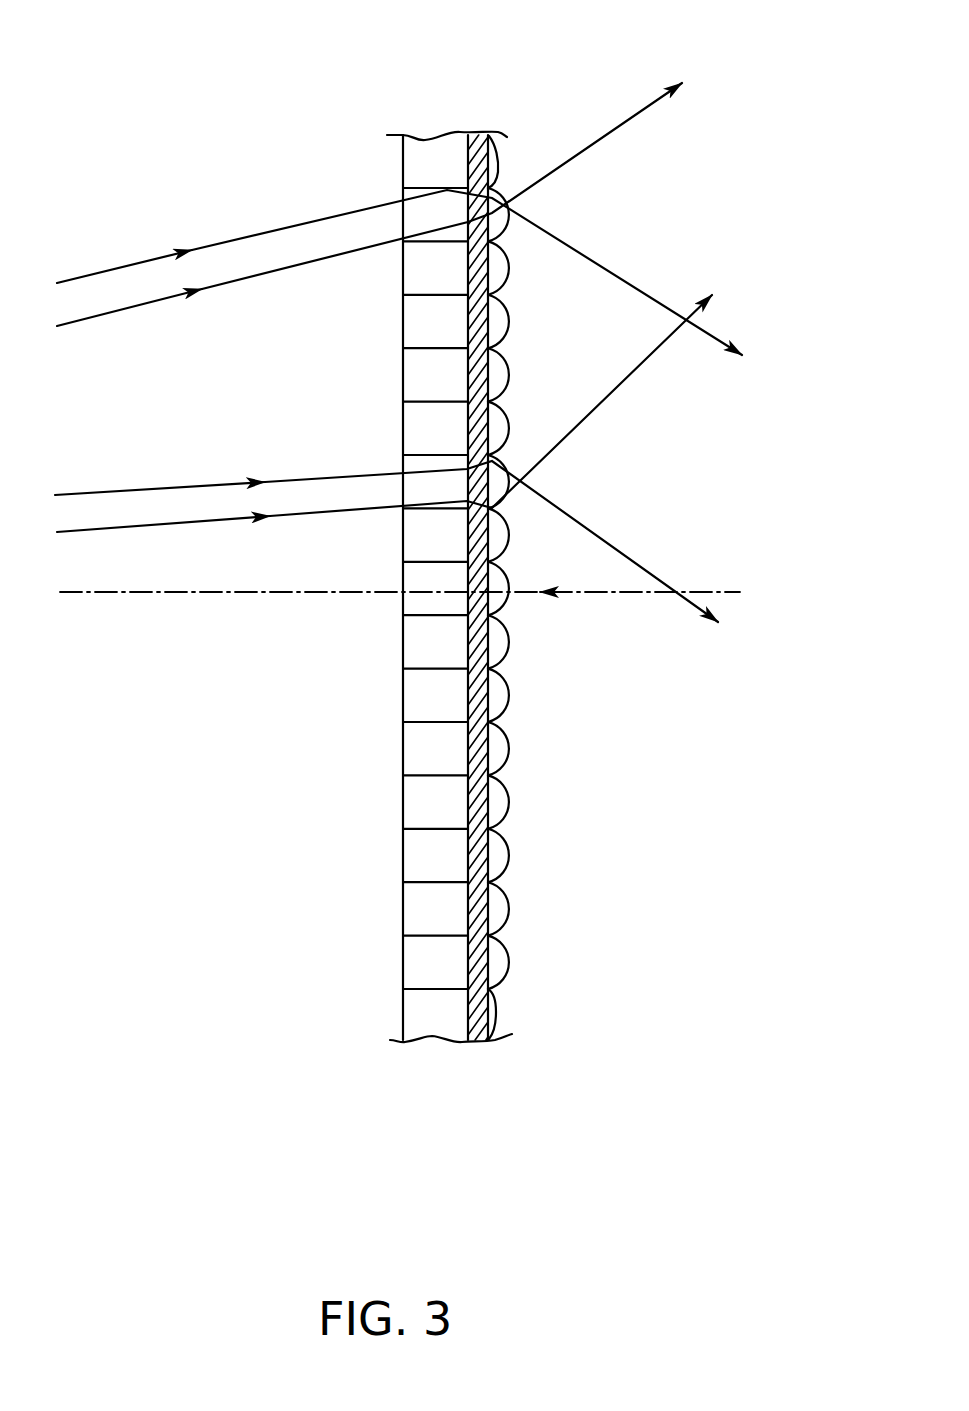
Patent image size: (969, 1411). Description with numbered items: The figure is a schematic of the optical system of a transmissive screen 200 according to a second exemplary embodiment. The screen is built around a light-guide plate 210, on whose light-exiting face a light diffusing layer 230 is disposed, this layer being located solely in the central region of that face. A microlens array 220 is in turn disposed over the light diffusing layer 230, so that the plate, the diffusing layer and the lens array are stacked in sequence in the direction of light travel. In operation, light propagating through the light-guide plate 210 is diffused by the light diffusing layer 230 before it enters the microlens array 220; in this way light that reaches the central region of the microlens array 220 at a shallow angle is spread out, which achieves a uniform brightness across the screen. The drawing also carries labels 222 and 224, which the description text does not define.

The transmissive screen 200 is at (356, 1028).
The light-guide plate 210 is at (435, 124).
The microlens array 220 is at (489, 123).
The optical axis 222 is at (576, 593).
The lens element 224 is at (519, 1018).
The light diffusing layer 230 is at (475, 124).